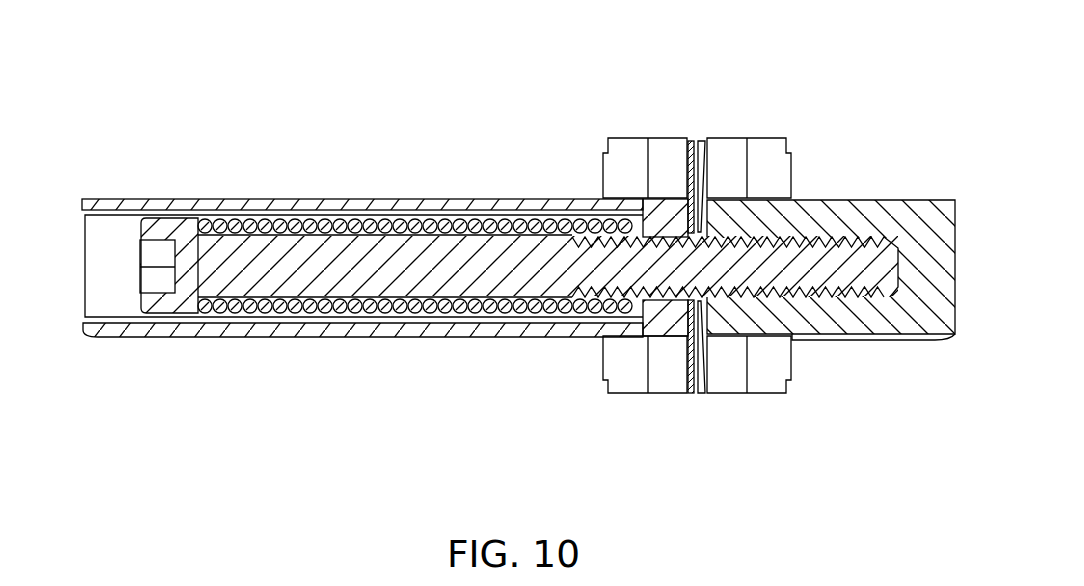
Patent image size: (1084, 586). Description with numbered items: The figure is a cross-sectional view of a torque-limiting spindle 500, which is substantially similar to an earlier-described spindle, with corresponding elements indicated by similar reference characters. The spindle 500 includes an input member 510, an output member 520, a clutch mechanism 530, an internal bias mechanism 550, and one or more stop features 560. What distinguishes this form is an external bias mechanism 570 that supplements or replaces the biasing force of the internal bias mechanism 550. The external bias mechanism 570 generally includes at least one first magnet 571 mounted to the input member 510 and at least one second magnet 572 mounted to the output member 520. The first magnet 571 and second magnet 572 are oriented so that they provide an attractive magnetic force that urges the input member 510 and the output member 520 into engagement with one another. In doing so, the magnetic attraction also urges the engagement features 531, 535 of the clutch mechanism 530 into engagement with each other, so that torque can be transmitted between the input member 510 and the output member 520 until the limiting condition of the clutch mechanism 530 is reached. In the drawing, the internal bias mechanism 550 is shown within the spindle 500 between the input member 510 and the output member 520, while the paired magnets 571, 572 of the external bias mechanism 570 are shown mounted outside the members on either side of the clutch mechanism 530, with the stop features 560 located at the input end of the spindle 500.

The torque-limiting spindle 500 is at (250, 86).
The input member 510 is at (179, 198).
The output member 520 is at (928, 200).
The clutch mechanism 530 is at (637, 342).
The engagement feature 531 is at (658, 204).
The engagement feature 535 is at (751, 207).
The bias mechanism 550 is at (128, 300).
The stop feature 560 is at (72, 235).
The external bias mechanism 570 is at (597, 86).
The first magnet 571 is at (636, 138).
The second magnet 572 is at (734, 138).